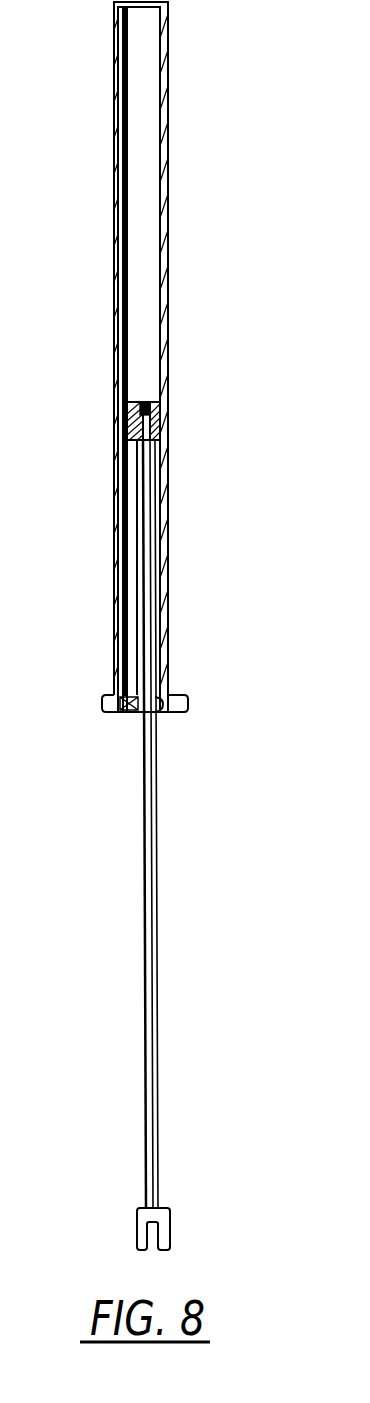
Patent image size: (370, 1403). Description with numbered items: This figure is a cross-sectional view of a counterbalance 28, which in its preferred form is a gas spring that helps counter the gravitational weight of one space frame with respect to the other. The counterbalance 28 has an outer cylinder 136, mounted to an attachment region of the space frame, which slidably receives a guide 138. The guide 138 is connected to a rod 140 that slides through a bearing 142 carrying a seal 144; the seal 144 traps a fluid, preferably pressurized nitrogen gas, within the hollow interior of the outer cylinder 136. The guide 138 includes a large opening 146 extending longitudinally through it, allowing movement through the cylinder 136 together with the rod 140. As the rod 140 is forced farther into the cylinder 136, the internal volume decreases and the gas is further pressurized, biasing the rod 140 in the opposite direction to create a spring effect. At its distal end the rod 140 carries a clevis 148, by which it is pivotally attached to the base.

The counterbalance 28 is at (196, 504).
The outer cylinder 136 is at (169, 291).
The guide 138 is at (163, 407).
The rod 140 is at (157, 997).
The bearing 142 is at (158, 712).
The seal 144 is at (135, 697).
The large opening 146 is at (142, 397).
The clevis 148 is at (170, 1210).